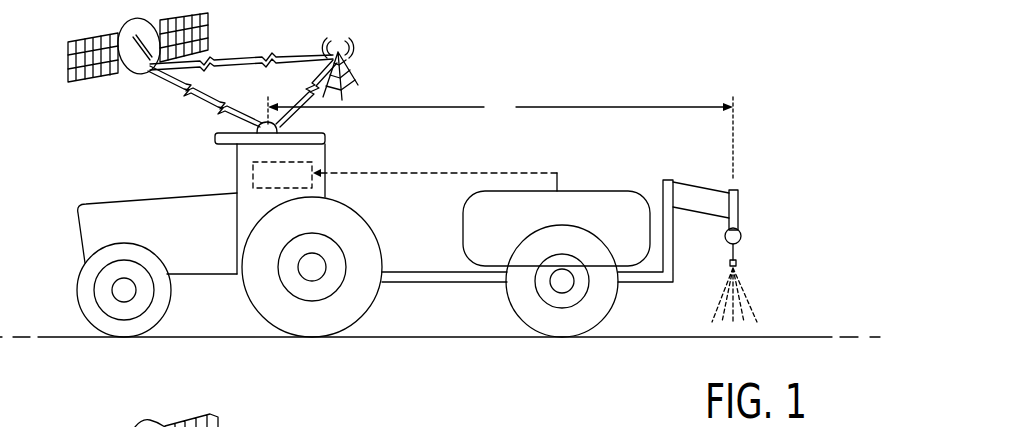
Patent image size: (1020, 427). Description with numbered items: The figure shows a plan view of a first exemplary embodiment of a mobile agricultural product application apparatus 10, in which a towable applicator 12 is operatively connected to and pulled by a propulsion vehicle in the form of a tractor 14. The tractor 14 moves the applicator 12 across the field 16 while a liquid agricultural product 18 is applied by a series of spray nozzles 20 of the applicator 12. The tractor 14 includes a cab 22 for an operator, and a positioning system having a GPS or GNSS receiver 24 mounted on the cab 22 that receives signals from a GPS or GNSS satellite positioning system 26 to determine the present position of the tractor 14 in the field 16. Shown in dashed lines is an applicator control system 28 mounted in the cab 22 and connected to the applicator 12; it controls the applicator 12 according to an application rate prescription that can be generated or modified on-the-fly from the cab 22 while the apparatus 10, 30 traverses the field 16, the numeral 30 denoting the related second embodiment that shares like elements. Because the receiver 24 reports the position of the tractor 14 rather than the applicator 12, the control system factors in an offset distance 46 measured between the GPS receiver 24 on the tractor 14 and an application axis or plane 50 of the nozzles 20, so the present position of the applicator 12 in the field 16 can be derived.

The mobile agricultural product application apparatus 10 is at (440, 207).
The towable applicator 12 is at (597, 191).
The tractor 14 is at (163, 199).
The field 16 is at (649, 337).
The liquid agricultural product 18 is at (758, 283).
The spray nozzles 20 is at (748, 255).
The cab 22 is at (237, 178).
The GPS or GNSS receiver 24 is at (257, 125).
The GPS or GNSS satellite positioning system 26 is at (368, 56).
The applicator control system 28 is at (327, 157).
The mobile agricultural product apparatus (second embodiment) 30 is at (436, 173).
The offset distance 46 is at (500, 110).
The application axis or plane 50 is at (733, 138).